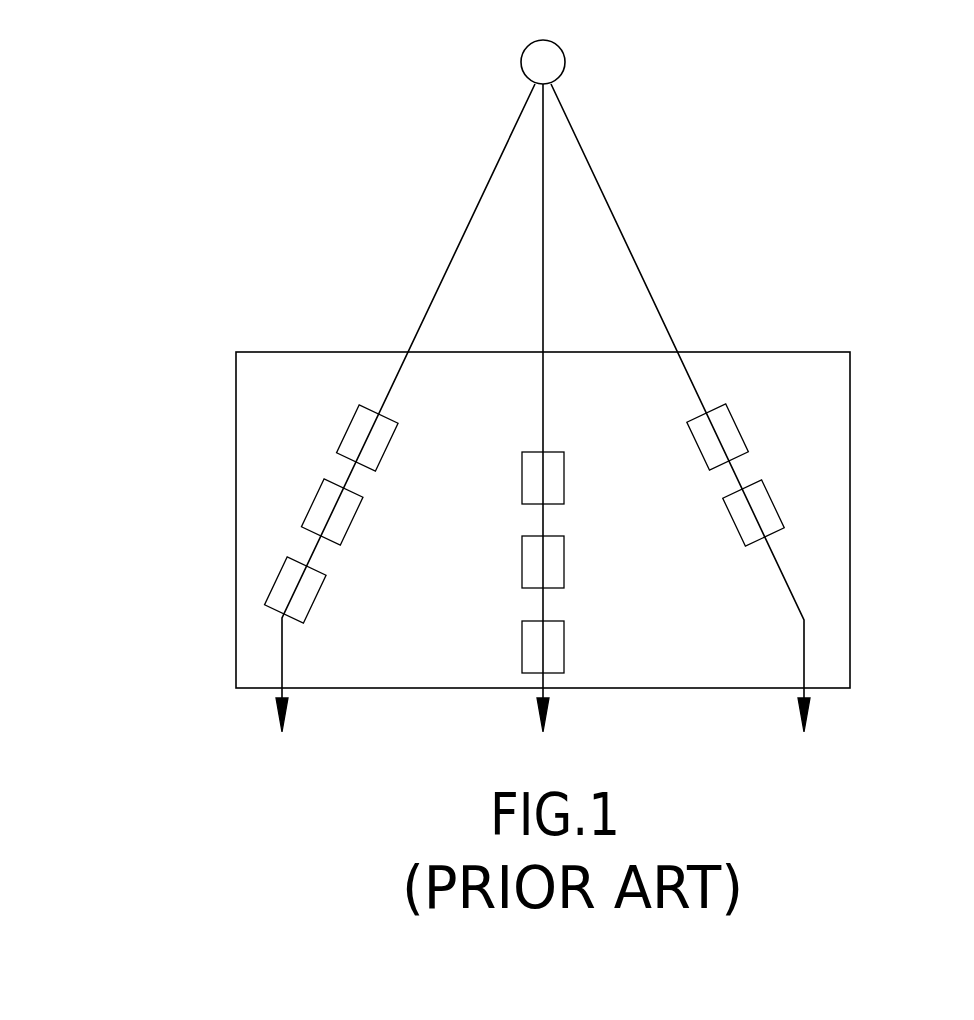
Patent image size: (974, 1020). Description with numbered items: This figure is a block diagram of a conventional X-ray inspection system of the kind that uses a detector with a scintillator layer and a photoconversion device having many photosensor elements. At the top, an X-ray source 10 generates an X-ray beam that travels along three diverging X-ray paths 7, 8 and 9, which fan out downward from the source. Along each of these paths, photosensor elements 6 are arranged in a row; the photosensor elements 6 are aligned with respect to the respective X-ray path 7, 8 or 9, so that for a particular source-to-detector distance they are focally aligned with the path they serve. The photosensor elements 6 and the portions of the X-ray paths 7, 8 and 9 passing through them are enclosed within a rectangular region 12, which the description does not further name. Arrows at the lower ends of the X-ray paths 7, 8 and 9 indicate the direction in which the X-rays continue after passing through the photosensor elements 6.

The photosensor elements 6 is at (358, 410).
The X-ray path 7 is at (452, 252).
The X-ray path 8 is at (543, 243).
The X-ray path 9 is at (618, 220).
The X-ray source 10 is at (565, 52).
The optical system housing 12 is at (852, 397).